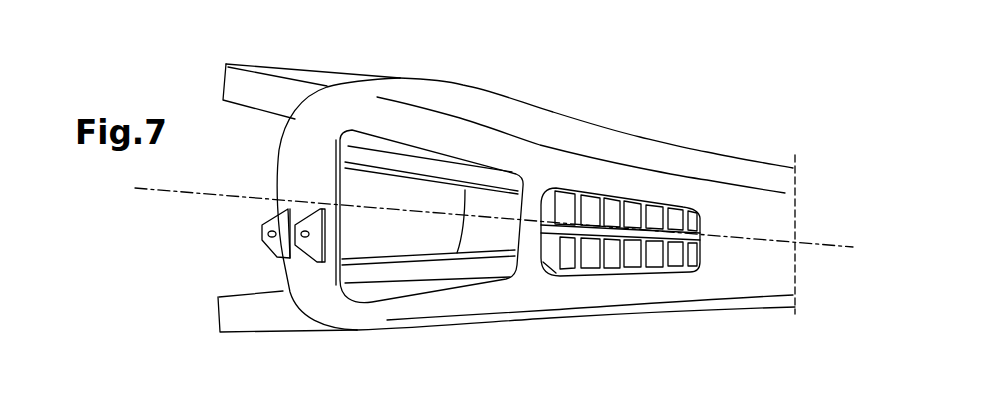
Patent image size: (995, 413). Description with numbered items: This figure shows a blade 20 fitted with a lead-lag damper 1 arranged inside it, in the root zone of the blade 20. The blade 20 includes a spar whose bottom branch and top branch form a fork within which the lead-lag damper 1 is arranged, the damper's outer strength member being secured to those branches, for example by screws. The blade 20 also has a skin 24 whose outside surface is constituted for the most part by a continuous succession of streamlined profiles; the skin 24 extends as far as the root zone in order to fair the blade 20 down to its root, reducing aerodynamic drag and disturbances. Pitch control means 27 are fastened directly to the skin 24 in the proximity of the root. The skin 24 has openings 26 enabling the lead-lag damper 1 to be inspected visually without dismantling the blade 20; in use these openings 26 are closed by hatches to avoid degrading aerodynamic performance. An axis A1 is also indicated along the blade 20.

The lead-lag damper 1 is at (433, 270).
The blade 20 is at (741, 322).
The skin 24 is at (707, 163).
The openings 26 is at (430, 193).
The pitch control means 27 is at (260, 232).
The axis A1 is at (835, 243).